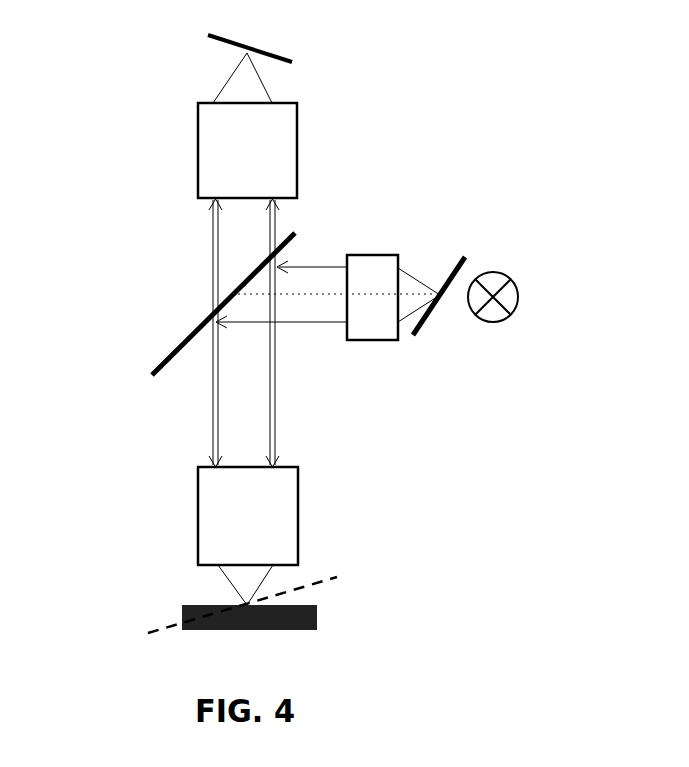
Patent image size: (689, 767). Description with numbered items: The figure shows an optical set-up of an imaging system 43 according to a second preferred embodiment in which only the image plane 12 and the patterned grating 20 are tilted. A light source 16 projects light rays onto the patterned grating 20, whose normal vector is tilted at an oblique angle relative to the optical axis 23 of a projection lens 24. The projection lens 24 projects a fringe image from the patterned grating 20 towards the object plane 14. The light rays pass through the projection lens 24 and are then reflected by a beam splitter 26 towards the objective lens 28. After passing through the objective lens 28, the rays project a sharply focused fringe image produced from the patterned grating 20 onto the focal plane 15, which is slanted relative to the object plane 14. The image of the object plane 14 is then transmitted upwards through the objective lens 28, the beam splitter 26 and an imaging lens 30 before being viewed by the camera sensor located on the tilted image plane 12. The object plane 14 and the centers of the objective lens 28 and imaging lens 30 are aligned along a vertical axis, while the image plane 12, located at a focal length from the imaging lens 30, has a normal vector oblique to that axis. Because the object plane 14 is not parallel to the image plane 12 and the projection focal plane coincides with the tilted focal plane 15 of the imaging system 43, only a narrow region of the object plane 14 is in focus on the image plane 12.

The image plane 12 is at (298, 63).
The imaging lens 30 is at (305, 138).
The imaging system 43 is at (140, 158).
The beam splitter 26 is at (190, 305).
The projection lens 24 is at (370, 345).
The optical axis 23 is at (420, 290).
The patterned grating 20 is at (455, 262).
The light source 16 is at (511, 320).
The objective lens 28 is at (305, 492).
The object plane 14 is at (320, 605).
The focal plane 15 is at (162, 625).